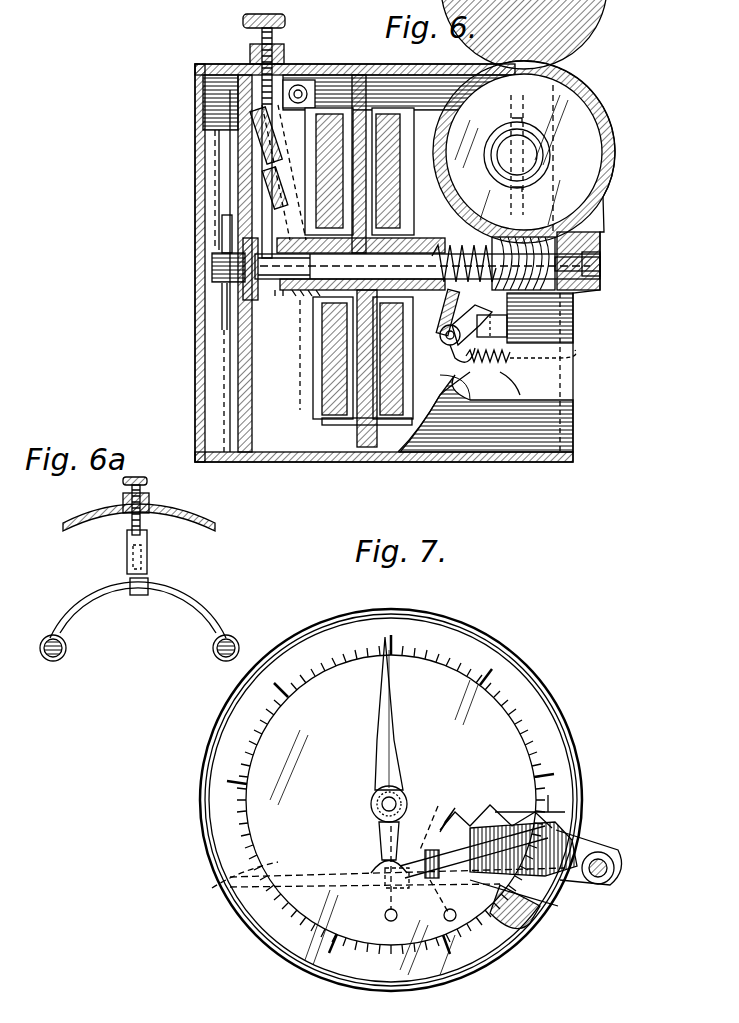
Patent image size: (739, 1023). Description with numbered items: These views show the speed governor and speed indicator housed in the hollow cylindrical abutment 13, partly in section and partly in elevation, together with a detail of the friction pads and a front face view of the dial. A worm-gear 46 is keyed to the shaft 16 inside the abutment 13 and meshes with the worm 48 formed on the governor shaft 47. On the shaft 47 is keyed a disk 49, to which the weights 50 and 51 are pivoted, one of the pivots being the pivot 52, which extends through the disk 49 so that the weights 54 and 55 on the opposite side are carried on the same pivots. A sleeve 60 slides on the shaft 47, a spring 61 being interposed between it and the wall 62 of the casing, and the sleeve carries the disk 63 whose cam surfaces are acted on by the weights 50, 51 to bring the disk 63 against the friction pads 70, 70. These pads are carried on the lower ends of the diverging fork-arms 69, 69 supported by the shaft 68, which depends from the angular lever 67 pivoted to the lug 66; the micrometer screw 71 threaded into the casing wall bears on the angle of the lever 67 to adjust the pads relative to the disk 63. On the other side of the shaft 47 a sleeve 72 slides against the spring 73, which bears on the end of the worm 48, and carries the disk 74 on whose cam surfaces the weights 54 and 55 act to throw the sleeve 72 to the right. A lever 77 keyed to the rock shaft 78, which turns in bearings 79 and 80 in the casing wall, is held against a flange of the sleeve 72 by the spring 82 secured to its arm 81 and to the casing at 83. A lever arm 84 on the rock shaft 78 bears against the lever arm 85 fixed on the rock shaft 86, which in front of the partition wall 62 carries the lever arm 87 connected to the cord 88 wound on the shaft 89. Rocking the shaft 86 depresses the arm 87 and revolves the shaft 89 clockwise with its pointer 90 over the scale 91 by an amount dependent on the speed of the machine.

In FIG. 6, the abutment 13 is at (520, 68).
In FIG. 6A, the abutment 13 is at (92, 513).
In FIG. 6, the shaft 16 is at (513, 148).
In FIG. 6, the worm-gear 46 is at (590, 135).
In FIG. 6, the shaft 47 is at (502, 238).
In FIG. 6, the worm 48 is at (565, 292).
In FIG. 6, the disk 49 is at (362, 458).
In FIG. 6, the weight 50 is at (330, 115).
In FIG. 6, the weight 51 is at (330, 345).
In FIG. 6, the pivot 52 is at (359, 164).
In FIG. 6, the weight 54 is at (395, 165).
In FIG. 6, the weight 55 is at (447, 332).
In FIG. 6, the sleeve 60 is at (300, 298).
In FIG. 6, the spring 61 is at (250, 300).
In FIG. 6, the wall 62 is at (254, 396).
In FIG. 6, the disk 63 is at (322, 420).
In FIG. 6, the lug 66 is at (300, 80).
In FIG. 6, the angular lever 67 is at (236, 108).
In FIG. 6A, the angular lever 67 is at (127, 548).
In FIG. 6A, the shaft 68 is at (145, 557).
In FIG. 6A, the fork-arm 69 is at (80, 610).
In FIG. 6A, the friction pad 70 is at (62, 660).
In FIG. 6, the micrometer screw 71 is at (250, 52).
In FIG. 6A, the micrometer screw 71 is at (150, 502).
In FIG. 6, the sleeve 72 is at (432, 253).
In FIG. 6, the spring 73 is at (452, 250).
In FIG. 6, the disk 74 is at (438, 405).
In FIG. 6, the lever 77 is at (452, 312).
In FIG. 6, the rock shaft 78 is at (446, 344).
In FIG. 7, the rock shaft 78 is at (315, 876).
In FIG. 7, the bearing 79 is at (212, 890).
In FIG. 7, the bearing 80 is at (580, 825).
In FIG. 6, the arm 81 is at (488, 352).
In FIG. 6, the spring 82 is at (480, 372).
In FIG. 7, the spring 82 is at (388, 920).
In FIG. 6, the casing attachment point 83 is at (560, 358).
In FIG. 6, the lever arm 84 is at (490, 316).
In FIG. 7, the lever arm 84 is at (470, 812).
In FIG. 6, the lever arm 85 is at (540, 313).
In FIG. 7, the lever arm 85 is at (565, 812).
In FIG. 6, the rock shaft 86 is at (510, 372).
In FIG. 7, the rock shaft 86 is at (612, 860).
In FIG. 7, the lever arm 87 is at (535, 928).
In FIG. 6, the cord 88 is at (232, 228).
In FIG. 7, the cord 88 is at (436, 820).
In FIG. 7, the shaft 89 is at (375, 801).
In FIG. 6, the pointer 90 is at (236, 172).
In FIG. 7, the pointer 90 is at (381, 712).
In FIG. 6, the scale 91 is at (232, 405).
In FIG. 7, the scale 91 is at (333, 670).